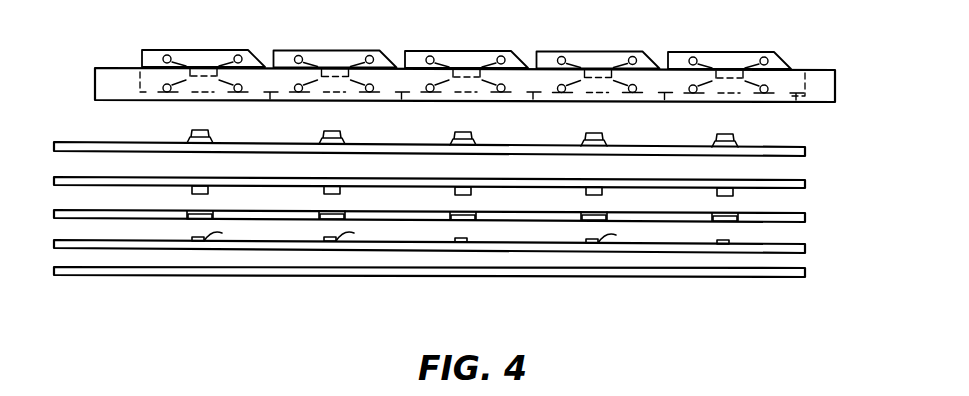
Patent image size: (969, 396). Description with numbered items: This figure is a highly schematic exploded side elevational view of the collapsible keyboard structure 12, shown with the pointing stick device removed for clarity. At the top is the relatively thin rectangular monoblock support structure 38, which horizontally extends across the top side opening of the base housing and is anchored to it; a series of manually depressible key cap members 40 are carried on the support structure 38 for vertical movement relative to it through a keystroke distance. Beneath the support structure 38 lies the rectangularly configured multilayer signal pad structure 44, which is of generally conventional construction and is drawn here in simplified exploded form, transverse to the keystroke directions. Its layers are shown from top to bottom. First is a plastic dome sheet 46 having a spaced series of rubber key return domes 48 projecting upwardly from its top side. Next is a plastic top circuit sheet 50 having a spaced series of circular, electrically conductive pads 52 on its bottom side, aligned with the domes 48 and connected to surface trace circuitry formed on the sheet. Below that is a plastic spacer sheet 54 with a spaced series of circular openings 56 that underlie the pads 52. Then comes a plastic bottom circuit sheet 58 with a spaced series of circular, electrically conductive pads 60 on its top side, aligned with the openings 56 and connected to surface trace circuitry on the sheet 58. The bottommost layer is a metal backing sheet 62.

The collapsible keyboard structure 12 is at (82, 106).
The monoblock support structure 38 is at (836, 84).
The key cap members 40 is at (206, 50).
The multilayer signal pad structure 44 is at (464, 227).
The dome sheet 46 is at (106, 142).
The key return domes 48 is at (212, 138).
The top circuit sheet 50 is at (165, 186).
The electrically conductive pads 52 is at (208, 190).
The spacer sheet 54 is at (131, 219).
The circular openings 56 is at (212, 213).
The bottom circuit sheet 58 is at (112, 249).
The electrically conductive pads 60 is at (222, 233).
The metal backing sheet 62 is at (89, 276).